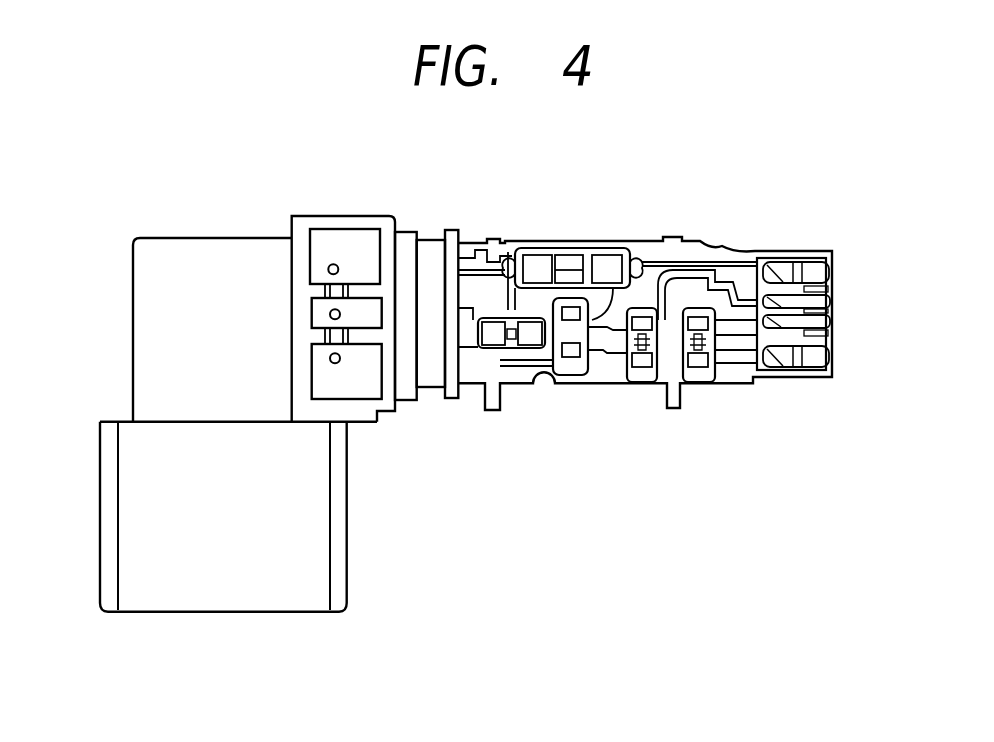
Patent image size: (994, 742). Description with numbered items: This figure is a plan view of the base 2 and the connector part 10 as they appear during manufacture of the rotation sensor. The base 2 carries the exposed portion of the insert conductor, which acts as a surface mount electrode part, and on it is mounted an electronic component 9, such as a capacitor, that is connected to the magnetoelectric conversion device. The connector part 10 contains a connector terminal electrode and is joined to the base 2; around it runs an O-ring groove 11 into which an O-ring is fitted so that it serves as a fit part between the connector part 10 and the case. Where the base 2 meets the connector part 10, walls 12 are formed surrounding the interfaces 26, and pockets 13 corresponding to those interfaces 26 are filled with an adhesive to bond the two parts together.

The base 2 is at (781, 252).
The electronic component 9 is at (709, 369).
The connector part 10 is at (313, 550).
The O-ring groove 11 is at (430, 238).
The walls 12 is at (380, 215).
The pockets 13 is at (317, 360).
The interfaces 26 is at (340, 358).